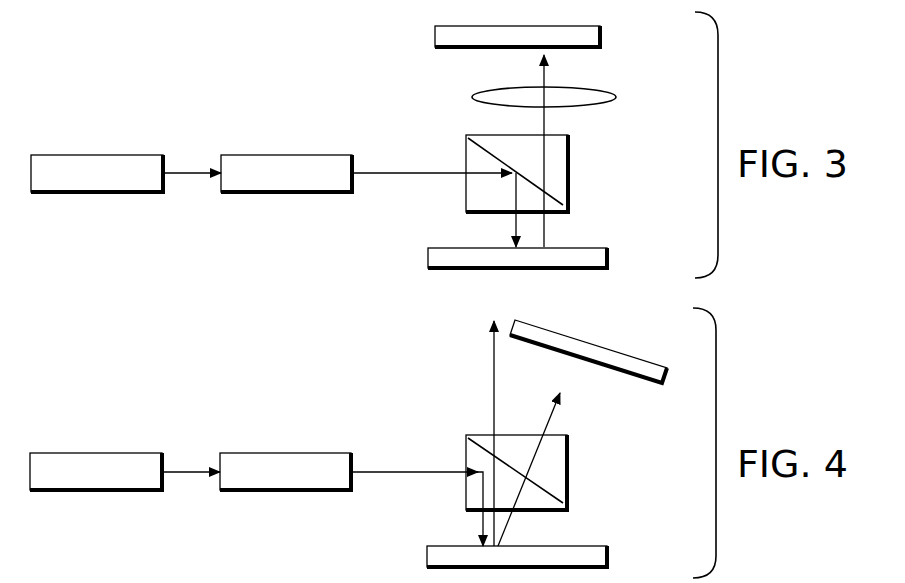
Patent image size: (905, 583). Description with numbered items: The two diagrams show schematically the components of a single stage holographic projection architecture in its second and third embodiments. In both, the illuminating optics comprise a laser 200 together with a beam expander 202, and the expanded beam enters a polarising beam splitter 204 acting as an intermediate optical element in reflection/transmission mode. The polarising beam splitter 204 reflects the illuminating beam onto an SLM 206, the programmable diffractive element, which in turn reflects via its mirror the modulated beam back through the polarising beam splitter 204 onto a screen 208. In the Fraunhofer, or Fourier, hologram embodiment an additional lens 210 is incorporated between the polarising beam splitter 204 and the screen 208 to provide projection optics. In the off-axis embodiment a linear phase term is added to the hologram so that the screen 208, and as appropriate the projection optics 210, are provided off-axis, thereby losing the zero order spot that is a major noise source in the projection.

In FIG. 3, the laser 200 is at (90, 155).
In FIG. 4, the laser 200 is at (90, 453).
In FIG. 3, the beam expander 202 is at (282, 155).
In FIG. 4, the beam expander 202 is at (282, 453).
In FIG. 3, the polarising beam splitter 204 is at (569, 171).
In FIG. 4, the polarising beam splitter 204 is at (568, 470).
In FIG. 3, the SLM 206 is at (428, 252).
In FIG. 4, the SLM 206 is at (427, 550).
In FIG. 3, the screen 208 is at (435, 32).
In FIG. 4, the screen 208 is at (591, 339).
In FIG. 3, the lens 210 is at (475, 96).